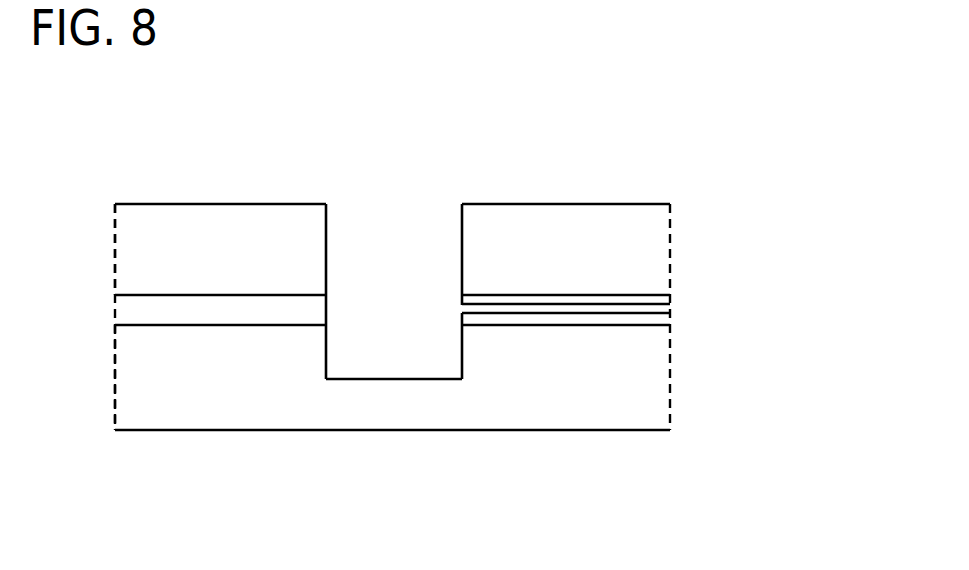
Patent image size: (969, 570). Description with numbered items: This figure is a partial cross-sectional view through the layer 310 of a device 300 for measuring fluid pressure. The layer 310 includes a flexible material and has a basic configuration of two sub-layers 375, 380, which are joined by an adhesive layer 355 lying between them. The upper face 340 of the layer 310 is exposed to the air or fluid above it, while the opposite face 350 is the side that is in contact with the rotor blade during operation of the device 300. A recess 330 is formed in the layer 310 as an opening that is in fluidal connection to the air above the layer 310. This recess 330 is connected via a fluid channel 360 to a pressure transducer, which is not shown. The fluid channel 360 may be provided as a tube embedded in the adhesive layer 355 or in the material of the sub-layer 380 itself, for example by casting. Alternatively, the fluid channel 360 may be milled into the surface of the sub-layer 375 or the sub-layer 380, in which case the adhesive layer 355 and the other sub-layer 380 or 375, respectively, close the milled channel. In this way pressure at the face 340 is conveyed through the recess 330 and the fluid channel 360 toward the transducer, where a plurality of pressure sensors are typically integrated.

The device 300 is at (767, 562).
The layer 310 is at (252, 427).
The recess 330 is at (398, 380).
The face 340 is at (210, 204).
The face 350 is at (586, 428).
The adhesive layer 355 is at (125, 308).
The fluid channel 360 is at (633, 310).
The sub-layer 375 is at (140, 392).
The sub-layer 380 is at (133, 238).